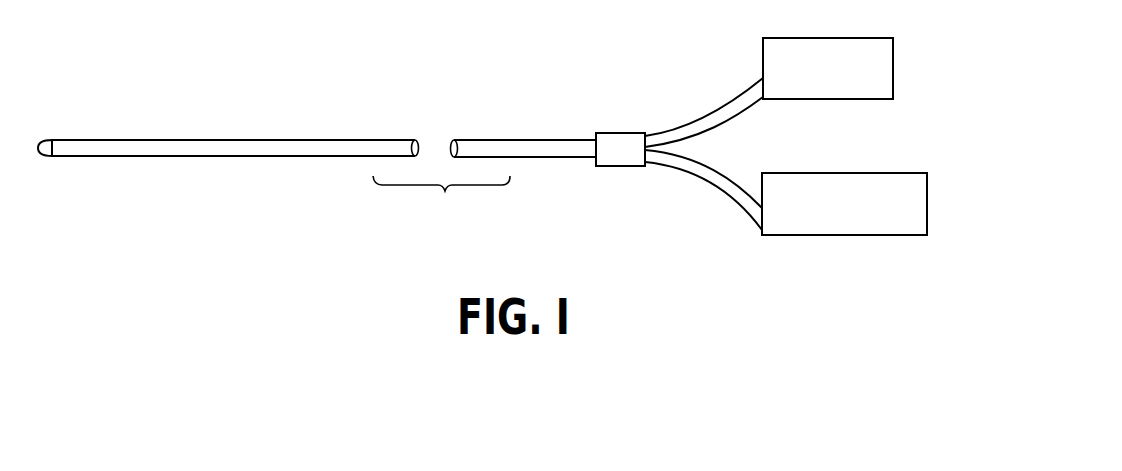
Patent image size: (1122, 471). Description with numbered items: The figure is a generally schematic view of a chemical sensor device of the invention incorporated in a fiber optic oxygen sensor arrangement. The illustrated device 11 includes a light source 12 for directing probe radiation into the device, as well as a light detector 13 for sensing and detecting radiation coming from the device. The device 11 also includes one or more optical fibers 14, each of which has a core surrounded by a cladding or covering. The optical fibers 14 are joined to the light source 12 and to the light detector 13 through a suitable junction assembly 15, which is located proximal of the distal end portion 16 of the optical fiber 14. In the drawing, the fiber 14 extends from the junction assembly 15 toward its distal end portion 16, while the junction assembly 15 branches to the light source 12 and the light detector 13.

The device 11 is at (477, 123).
The light source 12 is at (893, 72).
The light detector 13 is at (878, 235).
The optical fiber 14 is at (282, 139).
The junction assembly 15 is at (620, 157).
The distal end portion 16 is at (52, 140).